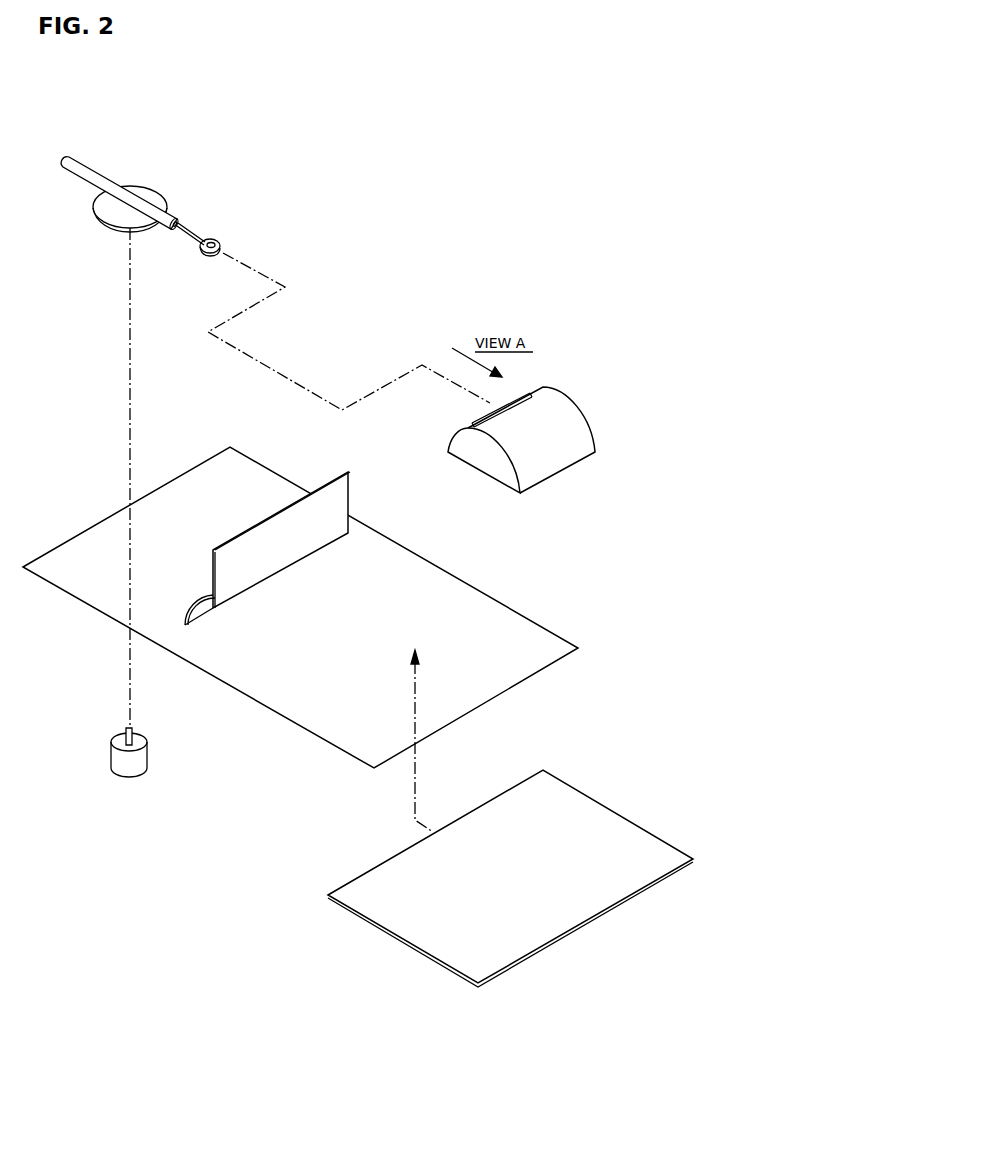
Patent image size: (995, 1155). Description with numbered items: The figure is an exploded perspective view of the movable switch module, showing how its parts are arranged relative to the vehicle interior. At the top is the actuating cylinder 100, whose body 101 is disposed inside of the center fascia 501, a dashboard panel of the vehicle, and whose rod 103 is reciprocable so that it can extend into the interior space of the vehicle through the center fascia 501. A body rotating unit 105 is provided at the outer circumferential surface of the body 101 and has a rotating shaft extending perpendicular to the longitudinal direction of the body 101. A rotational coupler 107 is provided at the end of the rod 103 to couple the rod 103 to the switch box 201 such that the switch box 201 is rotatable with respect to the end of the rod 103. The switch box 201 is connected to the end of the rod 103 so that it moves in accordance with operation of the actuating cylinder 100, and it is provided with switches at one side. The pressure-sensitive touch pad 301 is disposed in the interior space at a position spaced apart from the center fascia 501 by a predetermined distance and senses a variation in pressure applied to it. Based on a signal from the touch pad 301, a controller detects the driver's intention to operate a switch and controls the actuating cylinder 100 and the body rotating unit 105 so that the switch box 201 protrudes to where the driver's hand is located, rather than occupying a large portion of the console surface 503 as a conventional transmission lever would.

The actuating cylinder 100 is at (170, 197).
The body 101 is at (132, 200).
The rod 103 is at (195, 231).
The body rotating unit 105 is at (143, 760).
The rotational coupler 107 is at (224, 242).
The switch box 201 is at (553, 465).
The pressure-sensitive touch pad 301 is at (597, 812).
The center fascia 501 is at (340, 503).
The console surface 503 is at (332, 733).